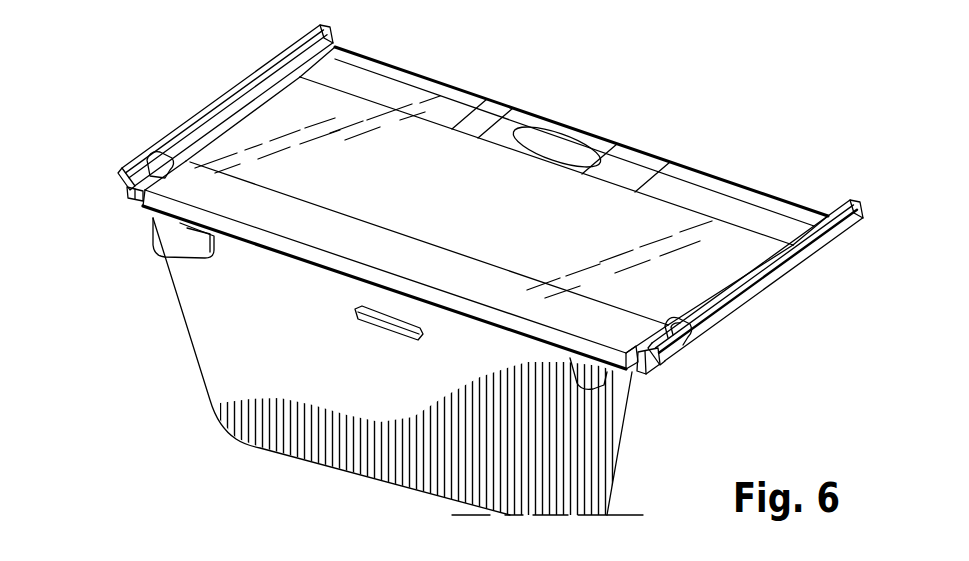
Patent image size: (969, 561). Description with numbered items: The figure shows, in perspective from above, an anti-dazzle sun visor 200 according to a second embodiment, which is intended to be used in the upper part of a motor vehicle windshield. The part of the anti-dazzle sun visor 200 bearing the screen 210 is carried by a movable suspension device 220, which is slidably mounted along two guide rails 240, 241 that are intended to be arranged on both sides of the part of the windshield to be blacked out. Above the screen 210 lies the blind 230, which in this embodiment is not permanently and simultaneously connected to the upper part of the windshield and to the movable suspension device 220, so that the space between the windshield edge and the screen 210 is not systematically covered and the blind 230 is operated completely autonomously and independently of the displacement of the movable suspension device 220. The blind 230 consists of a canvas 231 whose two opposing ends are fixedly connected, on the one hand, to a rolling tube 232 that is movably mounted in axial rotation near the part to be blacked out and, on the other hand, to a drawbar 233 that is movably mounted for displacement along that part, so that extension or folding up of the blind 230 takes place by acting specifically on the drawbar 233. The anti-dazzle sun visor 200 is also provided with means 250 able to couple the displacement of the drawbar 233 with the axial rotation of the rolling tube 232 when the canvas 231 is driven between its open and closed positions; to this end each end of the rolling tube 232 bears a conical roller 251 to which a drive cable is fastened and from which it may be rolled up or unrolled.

The anti-dazzle sun visor 200 is at (702, 383).
The screen 210 is at (182, 352).
The movable suspension device 220 is at (250, 203).
The blind 230 is at (602, 214).
The canvas 231 is at (403, 153).
The drawbar 233 is at (507, 120).
The guide rail 240 is at (240, 87).
The guide rail 241 is at (780, 273).
The coupling means 250 is at (150, 157).
The conical roller 251 is at (703, 333).
The rolling tube 232 is at (636, 375).